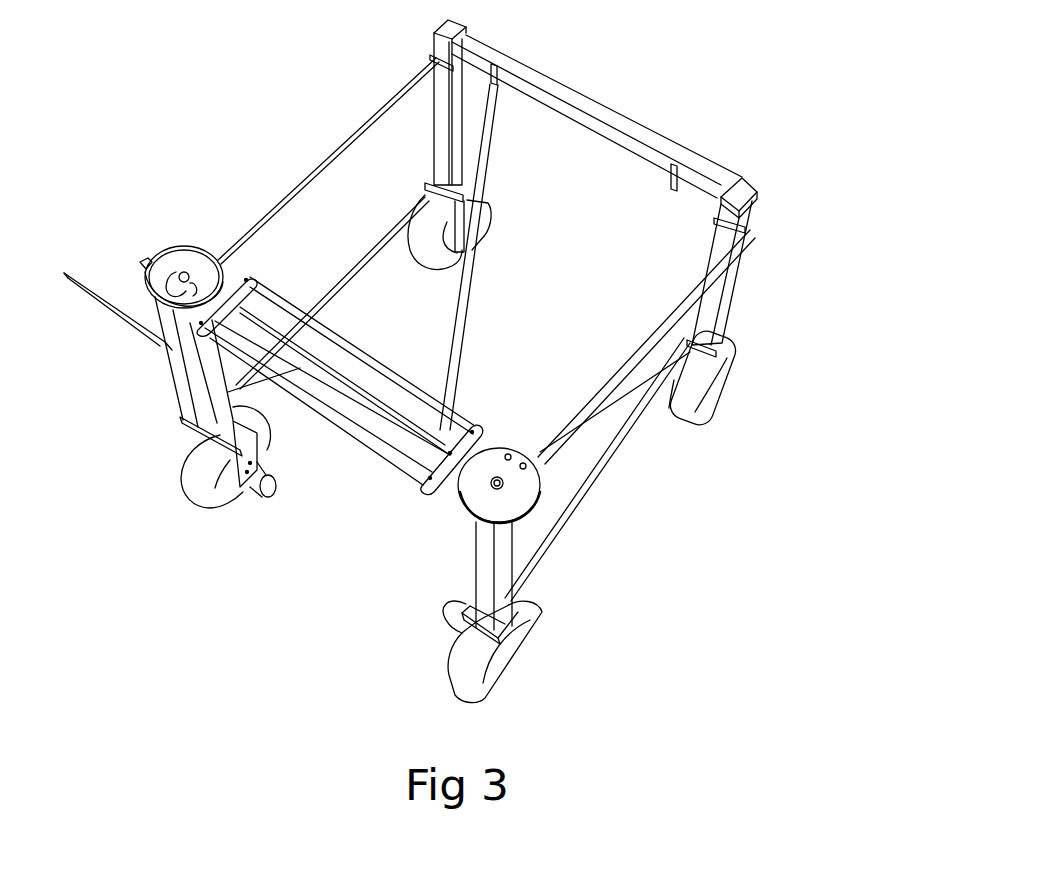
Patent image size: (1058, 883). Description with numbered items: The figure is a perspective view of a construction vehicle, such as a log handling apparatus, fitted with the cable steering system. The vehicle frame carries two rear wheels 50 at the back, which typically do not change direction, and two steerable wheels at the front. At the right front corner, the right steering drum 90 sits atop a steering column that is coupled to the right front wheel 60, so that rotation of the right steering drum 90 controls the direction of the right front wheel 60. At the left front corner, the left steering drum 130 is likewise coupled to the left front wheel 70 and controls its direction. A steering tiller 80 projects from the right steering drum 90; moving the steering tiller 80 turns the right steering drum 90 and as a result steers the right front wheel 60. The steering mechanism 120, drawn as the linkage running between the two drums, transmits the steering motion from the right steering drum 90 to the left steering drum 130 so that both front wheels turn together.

The rear wheels 50 is at (743, 343).
The right front wheel 60 is at (205, 500).
The left front wheel 70 is at (533, 623).
The steering tiller 80 is at (145, 207).
The right steering drum 90 is at (168, 296).
The steering mechanism 120 is at (361, 443).
The left steering drum 130 is at (515, 490).